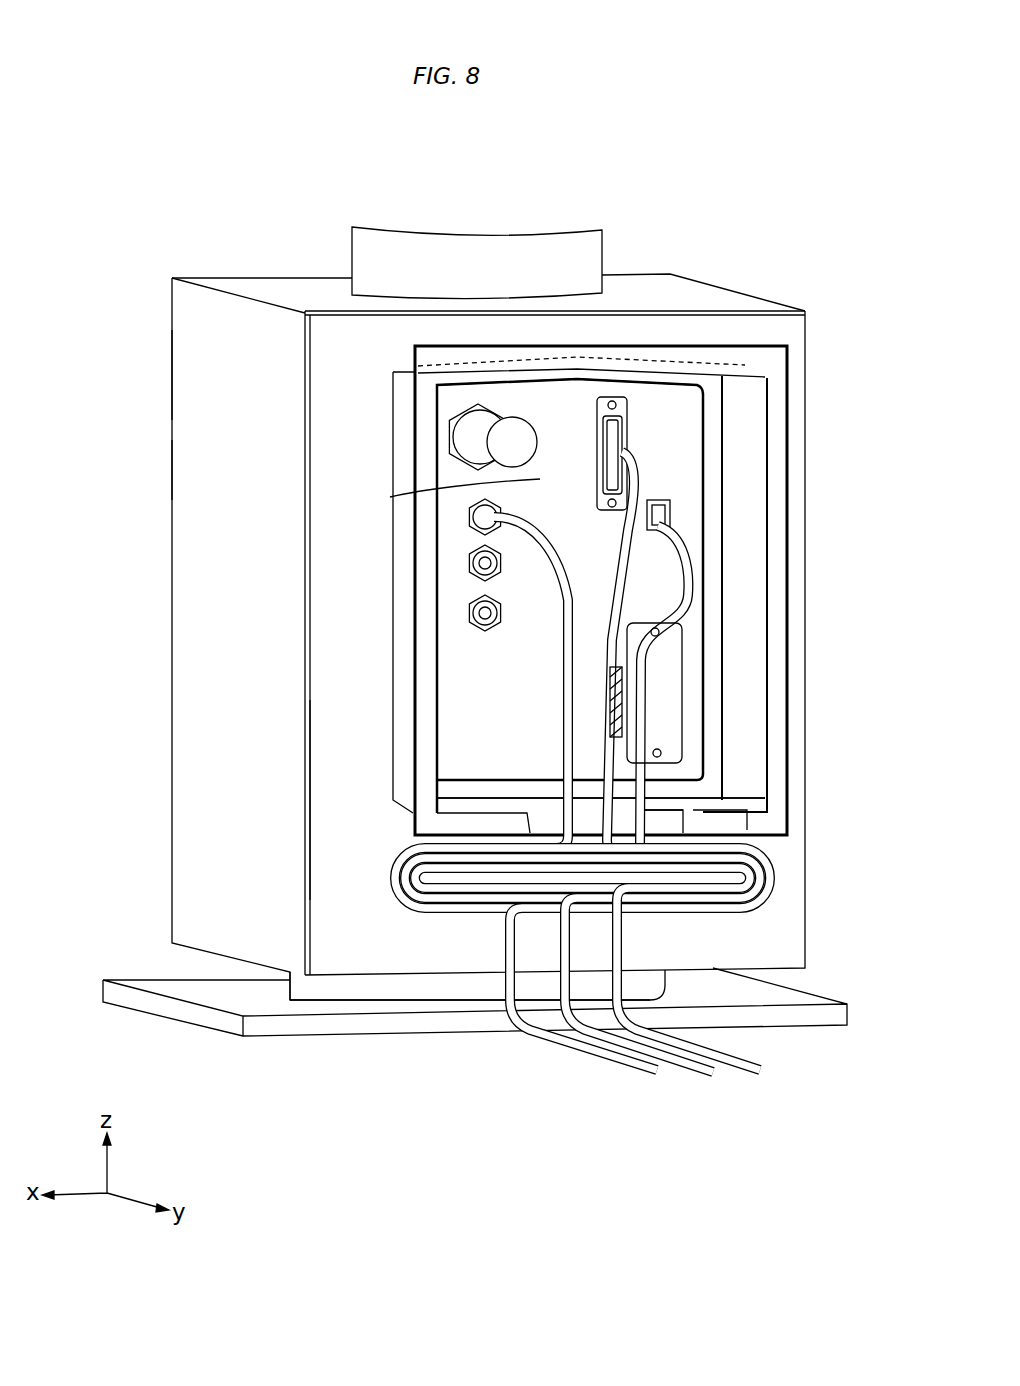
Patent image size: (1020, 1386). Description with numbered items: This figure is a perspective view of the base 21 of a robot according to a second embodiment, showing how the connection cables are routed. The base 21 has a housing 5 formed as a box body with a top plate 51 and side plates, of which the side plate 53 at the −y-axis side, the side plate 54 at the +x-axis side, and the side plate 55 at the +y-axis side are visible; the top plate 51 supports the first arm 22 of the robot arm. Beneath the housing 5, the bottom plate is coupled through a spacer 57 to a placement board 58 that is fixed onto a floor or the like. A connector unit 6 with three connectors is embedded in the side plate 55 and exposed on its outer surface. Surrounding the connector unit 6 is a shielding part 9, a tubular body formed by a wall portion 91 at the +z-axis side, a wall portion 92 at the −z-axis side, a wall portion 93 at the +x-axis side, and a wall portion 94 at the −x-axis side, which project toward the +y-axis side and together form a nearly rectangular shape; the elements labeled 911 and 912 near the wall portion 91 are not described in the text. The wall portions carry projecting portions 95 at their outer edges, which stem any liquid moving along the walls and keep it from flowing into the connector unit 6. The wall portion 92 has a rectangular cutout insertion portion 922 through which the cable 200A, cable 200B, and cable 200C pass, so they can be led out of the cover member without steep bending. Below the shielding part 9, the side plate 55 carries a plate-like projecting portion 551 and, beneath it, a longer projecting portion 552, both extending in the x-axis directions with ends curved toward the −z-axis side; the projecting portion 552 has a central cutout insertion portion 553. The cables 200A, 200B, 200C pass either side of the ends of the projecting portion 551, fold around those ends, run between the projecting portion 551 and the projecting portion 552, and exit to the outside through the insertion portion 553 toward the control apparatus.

The housing 5 is at (230, 277).
The base 21 is at (312, 287).
The first arm 22 is at (478, 252).
The top plate 51 is at (262, 287).
The side plate 53 is at (172, 391).
The side plate 54 is at (218, 465).
The side plate 55 is at (345, 838).
The spacer 57 is at (383, 987).
The placement board 58 is at (227, 997).
The connector unit 6 is at (390, 497).
The shielding part 9 is at (787, 473).
The wall portion 91 is at (802, 177).
The first connector 911 is at (512, 362).
The second connector 912 is at (677, 362).
The wall portion 92 is at (705, 800).
The insertion portion 922 is at (660, 822).
The wall portion 93 is at (405, 550).
The wall portion 94 is at (752, 547).
The projecting portions 95 is at (762, 360).
The projecting portion 551 is at (757, 885).
The projecting portion 552 is at (712, 920).
The insertion portion 553 is at (608, 905).
The cable 200A is at (600, 1066).
The cable 200B is at (675, 1070).
The cable 200C is at (738, 1070).